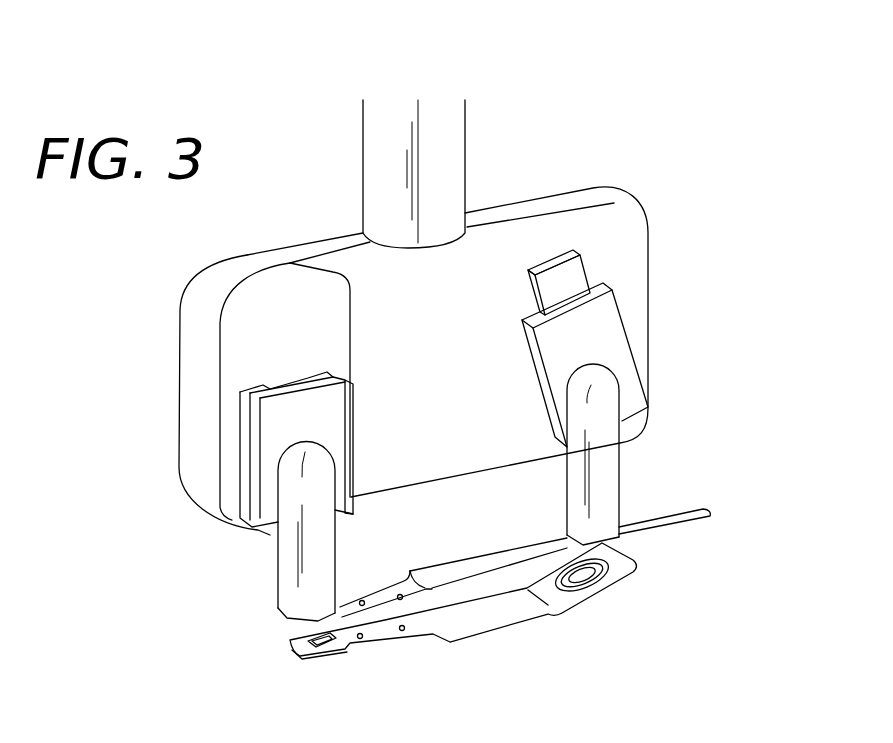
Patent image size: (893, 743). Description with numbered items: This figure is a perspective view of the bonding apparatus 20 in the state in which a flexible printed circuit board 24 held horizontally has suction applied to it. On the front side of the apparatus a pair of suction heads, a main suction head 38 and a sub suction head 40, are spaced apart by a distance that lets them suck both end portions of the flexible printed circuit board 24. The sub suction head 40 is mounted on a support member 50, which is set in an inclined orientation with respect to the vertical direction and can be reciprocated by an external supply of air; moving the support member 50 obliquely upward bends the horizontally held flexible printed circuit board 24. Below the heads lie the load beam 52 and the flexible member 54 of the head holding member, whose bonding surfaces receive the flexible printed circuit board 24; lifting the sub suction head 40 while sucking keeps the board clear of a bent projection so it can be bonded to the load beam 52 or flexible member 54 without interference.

The bonding apparatus 20 is at (602, 166).
The flexible printed circuit board 24 is at (690, 512).
The main suction head 38 is at (283, 563).
The sub suction head 40 is at (612, 460).
The support member 50 is at (612, 323).
The load beam 52 is at (480, 610).
The flexible member 54 is at (313, 638).